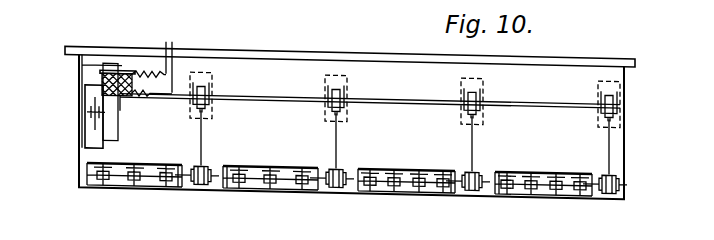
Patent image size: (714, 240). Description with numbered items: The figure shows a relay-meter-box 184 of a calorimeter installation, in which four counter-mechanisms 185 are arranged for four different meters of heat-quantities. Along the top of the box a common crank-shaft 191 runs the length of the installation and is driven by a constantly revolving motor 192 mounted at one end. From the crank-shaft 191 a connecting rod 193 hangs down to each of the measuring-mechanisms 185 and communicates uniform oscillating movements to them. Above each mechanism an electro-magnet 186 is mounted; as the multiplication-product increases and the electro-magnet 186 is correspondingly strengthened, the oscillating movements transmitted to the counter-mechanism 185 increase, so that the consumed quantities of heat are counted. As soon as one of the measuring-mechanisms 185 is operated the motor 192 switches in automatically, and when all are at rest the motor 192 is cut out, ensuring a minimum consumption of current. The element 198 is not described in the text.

The relay-meter-box 184 is at (339, 158).
The counter-mechanism 185 is at (233, 189).
The electro-magnet 186 is at (212, 83).
The crank-shaft 191 is at (277, 82).
The motor 192 is at (82, 121).
The connecting rod 193 is at (338, 140).
The roller 198 is at (203, 136).